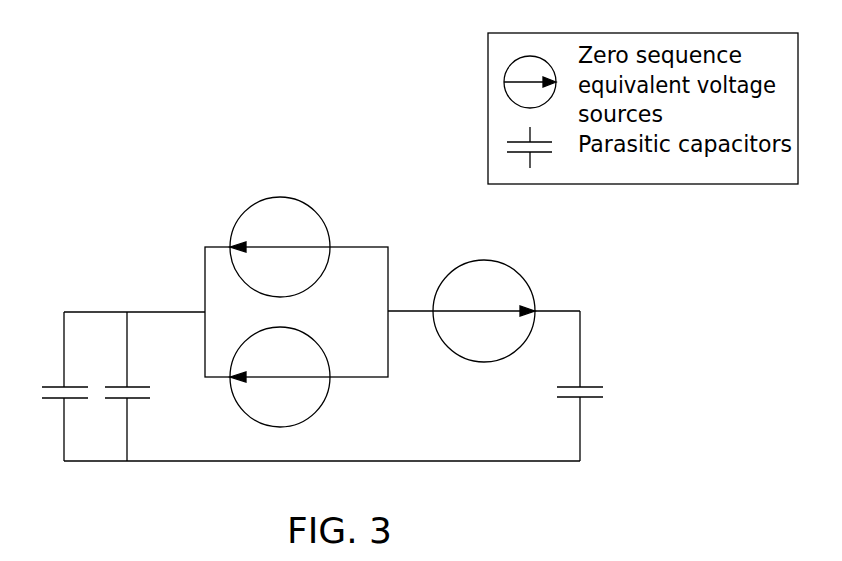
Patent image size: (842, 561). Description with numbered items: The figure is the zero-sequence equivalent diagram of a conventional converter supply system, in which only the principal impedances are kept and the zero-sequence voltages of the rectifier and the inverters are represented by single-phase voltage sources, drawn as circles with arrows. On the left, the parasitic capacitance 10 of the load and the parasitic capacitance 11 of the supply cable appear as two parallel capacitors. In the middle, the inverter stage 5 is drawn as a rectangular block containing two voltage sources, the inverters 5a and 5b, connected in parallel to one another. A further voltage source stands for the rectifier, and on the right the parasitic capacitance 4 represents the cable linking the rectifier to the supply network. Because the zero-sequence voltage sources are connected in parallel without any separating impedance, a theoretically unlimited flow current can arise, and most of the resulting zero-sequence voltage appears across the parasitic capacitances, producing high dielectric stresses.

The parasitic capacitance 4 is at (588, 387).
The inverter stage 5 is at (306, 317).
The inverter 5a is at (279, 198).
The inverter 5b is at (282, 428).
The parasitic capacitance 10 is at (52, 386).
The parasitic capacitance 11 is at (138, 400).